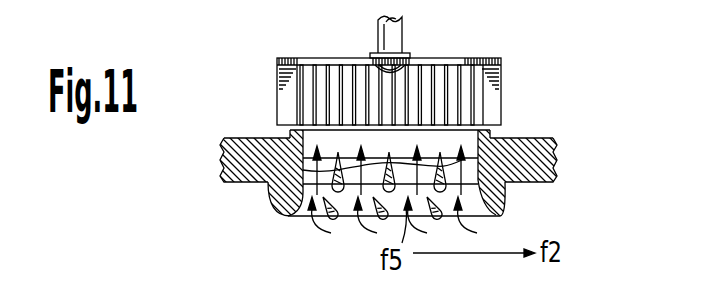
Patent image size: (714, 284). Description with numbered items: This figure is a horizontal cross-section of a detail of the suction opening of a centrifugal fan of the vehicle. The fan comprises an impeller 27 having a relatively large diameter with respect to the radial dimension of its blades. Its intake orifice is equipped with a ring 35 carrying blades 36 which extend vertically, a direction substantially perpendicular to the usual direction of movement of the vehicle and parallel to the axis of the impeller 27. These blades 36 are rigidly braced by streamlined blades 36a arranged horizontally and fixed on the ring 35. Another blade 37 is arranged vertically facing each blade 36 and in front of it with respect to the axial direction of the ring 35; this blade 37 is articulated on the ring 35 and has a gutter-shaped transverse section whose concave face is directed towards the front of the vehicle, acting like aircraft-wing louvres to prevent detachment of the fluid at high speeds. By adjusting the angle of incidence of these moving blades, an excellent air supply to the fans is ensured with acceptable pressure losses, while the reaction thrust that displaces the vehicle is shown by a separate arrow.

The impeller 27 is at (462, 60).
The blades 36 is at (266, 148).
The streamlined blades 36a is at (462, 160).
The ring 35 is at (298, 212).
The blade 37 is at (318, 224).